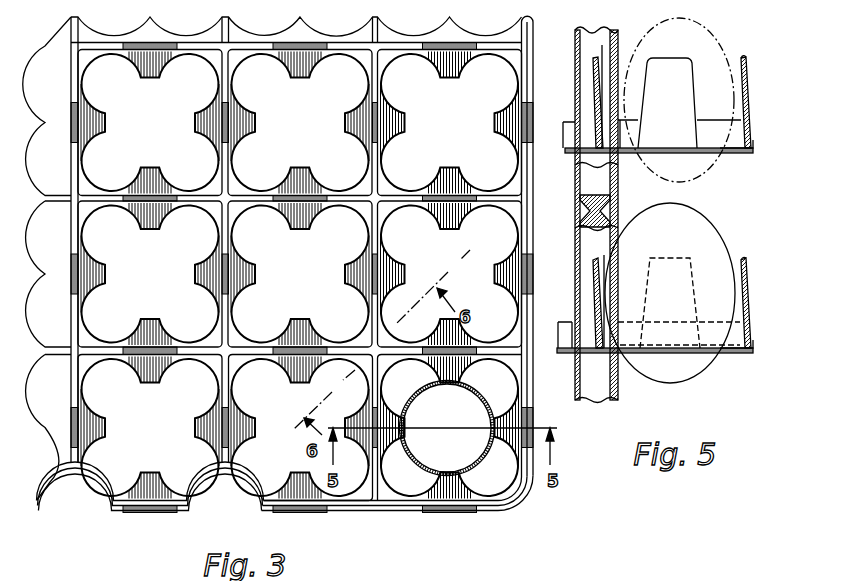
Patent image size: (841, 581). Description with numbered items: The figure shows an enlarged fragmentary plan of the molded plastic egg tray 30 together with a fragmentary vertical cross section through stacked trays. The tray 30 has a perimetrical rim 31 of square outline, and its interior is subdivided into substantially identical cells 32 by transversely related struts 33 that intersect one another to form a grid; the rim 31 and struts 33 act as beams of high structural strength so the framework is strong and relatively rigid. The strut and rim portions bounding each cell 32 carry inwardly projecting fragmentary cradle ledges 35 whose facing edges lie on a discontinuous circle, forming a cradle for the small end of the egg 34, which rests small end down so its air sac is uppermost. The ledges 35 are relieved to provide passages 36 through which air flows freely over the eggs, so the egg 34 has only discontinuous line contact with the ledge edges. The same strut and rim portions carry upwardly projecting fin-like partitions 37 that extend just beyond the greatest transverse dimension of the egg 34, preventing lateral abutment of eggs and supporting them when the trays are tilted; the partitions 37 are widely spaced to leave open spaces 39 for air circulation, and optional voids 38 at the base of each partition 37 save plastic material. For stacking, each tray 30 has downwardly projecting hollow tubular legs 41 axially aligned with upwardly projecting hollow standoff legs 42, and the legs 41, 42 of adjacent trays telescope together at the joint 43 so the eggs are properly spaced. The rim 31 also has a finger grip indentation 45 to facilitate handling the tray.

In FIG. 3, the tray 30 is at (540, 55).
In FIG. 3, the perimetrical rim 31 is at (360, 504).
In FIG. 3, the cell 32 is at (114, 92).
In FIG. 3, the strut 33 is at (340, 200).
In FIG. 5, the strut 33 is at (564, 325).
In FIG. 3, the egg 34 is at (472, 390).
In FIG. 5, the egg 34 is at (700, 166).
In FIG. 3, the cradle ledge 35 is at (292, 321).
In FIG. 5, the cradle ledge 35 is at (640, 153).
In FIG. 3, the passage 36 is at (262, 232).
In FIG. 3, the fin-like partition 37 is at (450, 77).
In FIG. 5, the fin-like partition 37 is at (675, 67).
In FIG. 5, the void 38 is at (752, 142).
In FIG. 5, the open space 39 is at (744, 57).
In FIG. 5, the tubular leg 41 is at (619, 190).
In FIG. 5, the standoff leg 42 is at (580, 96).
In FIG. 5, the joint 43 is at (572, 205).
In FIG. 3, the finger grip indentation 45 is at (223, 490).